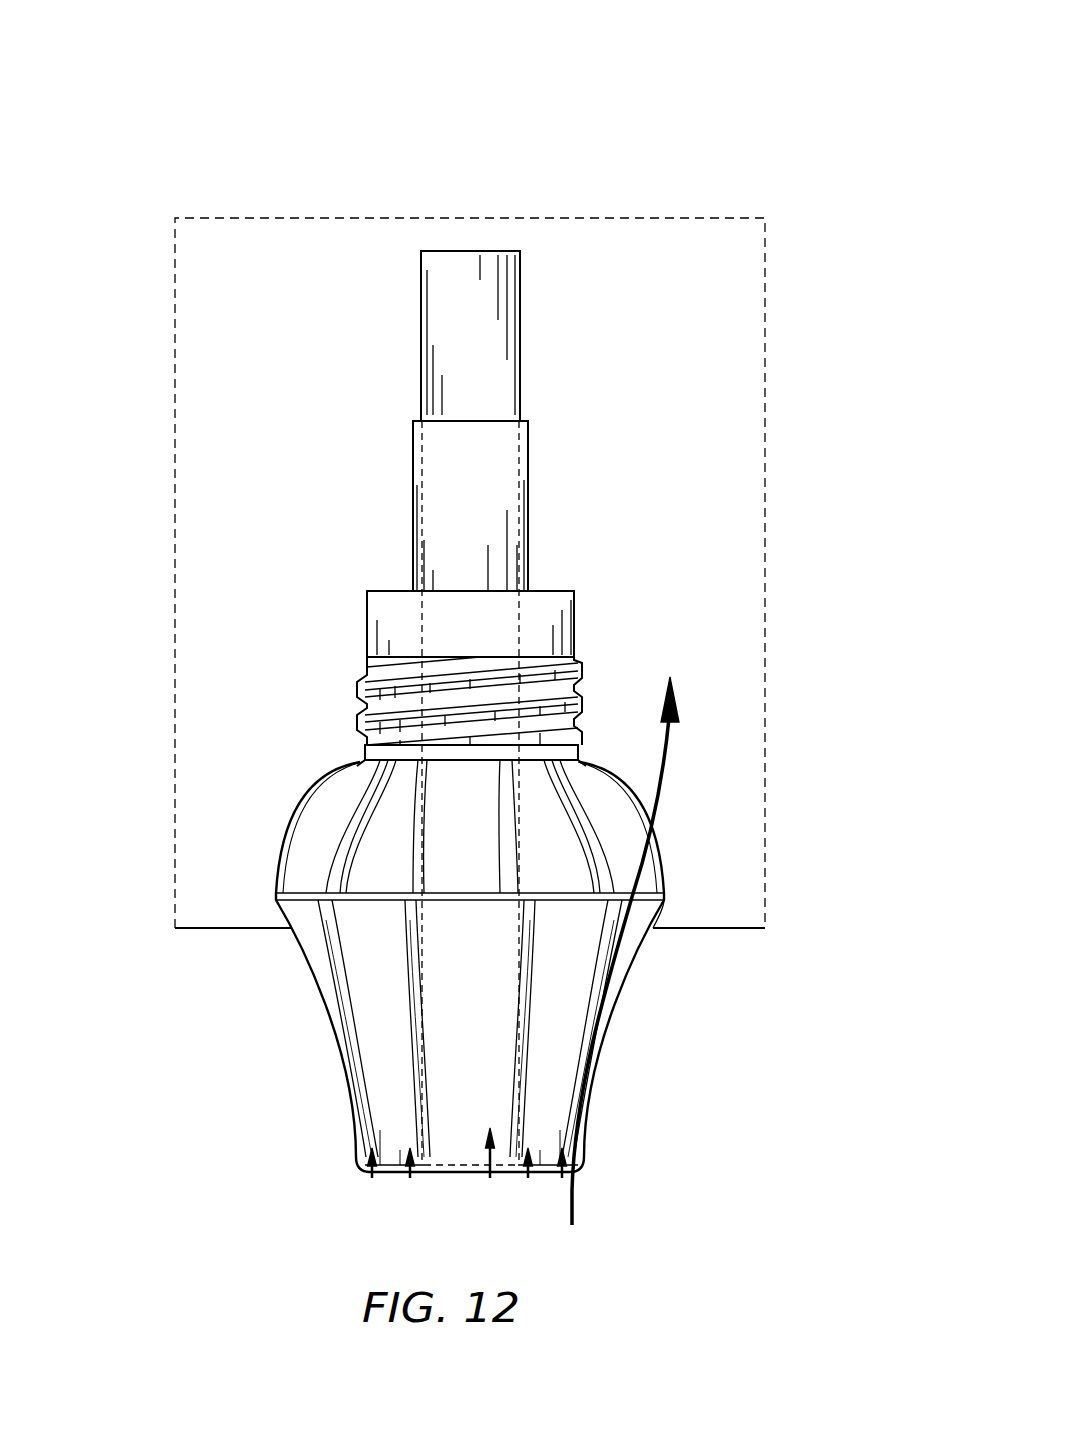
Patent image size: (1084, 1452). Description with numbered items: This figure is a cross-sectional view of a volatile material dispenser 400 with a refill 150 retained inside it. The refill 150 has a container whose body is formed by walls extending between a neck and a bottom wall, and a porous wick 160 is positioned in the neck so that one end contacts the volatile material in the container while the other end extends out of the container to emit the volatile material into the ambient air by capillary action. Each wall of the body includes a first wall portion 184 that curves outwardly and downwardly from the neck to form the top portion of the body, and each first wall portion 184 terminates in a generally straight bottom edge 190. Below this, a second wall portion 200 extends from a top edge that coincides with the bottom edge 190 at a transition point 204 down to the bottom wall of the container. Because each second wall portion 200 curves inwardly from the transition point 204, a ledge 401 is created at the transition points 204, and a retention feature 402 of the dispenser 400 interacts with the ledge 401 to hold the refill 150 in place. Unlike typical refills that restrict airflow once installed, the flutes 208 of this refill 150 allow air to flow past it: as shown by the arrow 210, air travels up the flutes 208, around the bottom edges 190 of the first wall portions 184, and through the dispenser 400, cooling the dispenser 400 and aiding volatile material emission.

The volatile material dispenser 400 is at (742, 132).
The refill 150 is at (634, 613).
The porous wick 160 is at (522, 398).
The first wall portion 184 is at (323, 825).
The bottom edge 190 is at (317, 893).
The transition point 204 is at (278, 896).
The second wall portion 200 is at (460, 1015).
The flute 208 is at (372, 1178).
The arrow 210 is at (574, 1200).
The ledge 401 is at (667, 897).
The retention feature 402 is at (235, 930).